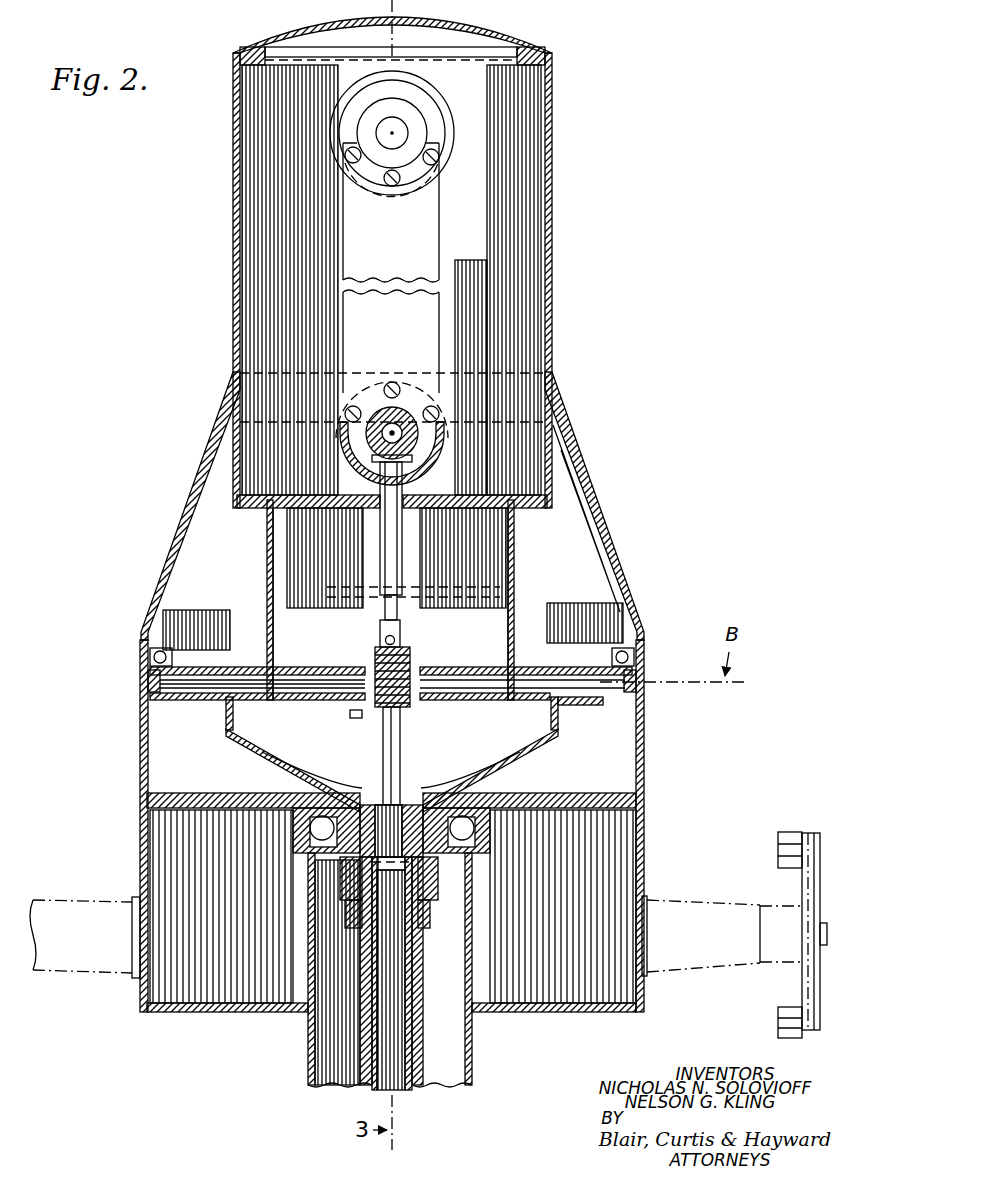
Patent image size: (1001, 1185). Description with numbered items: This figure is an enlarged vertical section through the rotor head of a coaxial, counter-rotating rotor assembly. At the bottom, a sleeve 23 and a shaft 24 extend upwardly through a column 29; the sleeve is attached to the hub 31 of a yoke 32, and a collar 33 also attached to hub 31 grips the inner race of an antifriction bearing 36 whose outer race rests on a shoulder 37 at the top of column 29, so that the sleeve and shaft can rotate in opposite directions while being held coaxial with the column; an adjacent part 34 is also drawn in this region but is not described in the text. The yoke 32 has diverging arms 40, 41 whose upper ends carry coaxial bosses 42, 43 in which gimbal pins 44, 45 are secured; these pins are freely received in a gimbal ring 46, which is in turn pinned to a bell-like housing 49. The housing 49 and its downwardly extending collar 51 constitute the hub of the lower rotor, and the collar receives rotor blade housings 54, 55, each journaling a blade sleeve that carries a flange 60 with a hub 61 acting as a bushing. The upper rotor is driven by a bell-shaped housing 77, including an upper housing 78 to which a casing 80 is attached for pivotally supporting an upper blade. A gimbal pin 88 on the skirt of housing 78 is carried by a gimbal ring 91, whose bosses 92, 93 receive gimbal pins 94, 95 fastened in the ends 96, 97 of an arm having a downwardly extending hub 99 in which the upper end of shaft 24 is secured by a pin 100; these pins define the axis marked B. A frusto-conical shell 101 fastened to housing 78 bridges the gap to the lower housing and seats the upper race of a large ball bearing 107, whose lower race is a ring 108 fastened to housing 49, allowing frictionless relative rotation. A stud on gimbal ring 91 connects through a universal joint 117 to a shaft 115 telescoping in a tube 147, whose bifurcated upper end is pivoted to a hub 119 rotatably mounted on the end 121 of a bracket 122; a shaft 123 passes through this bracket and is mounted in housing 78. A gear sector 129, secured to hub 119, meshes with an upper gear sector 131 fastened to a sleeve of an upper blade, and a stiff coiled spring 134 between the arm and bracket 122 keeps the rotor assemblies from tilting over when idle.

The sleeve 23 is at (425, 978).
The shaft 24 is at (410, 1042).
The column 29 is at (474, 1034).
The hub 31 is at (438, 925).
The yoke 32 is at (503, 776).
The collar 33 is at (440, 888).
The hub 34 is at (450, 852).
The antifriction bearing 36 is at (490, 836).
The shoulder 37 is at (482, 857).
The arm 40 is at (268, 757).
The arm 41 is at (560, 742).
The boss 42 is at (220, 720).
The boss 43 is at (572, 703).
The gimbal pin 44 is at (195, 705).
The gimbal pin 45 is at (592, 690).
The gimbal ring 46 is at (170, 702).
The bell-like housing 49 is at (140, 767).
The collar 51 is at (138, 845).
The rotor blade housing 54 is at (62, 900).
The rotor blade housing 55 is at (704, 898).
The flange 60 is at (802, 978).
The hub 61 is at (767, 965).
The bell-shaped housing 77 is at (604, 316).
The upper housing 78 is at (553, 278).
The casing 80 is at (425, 120).
The gimbal pin 88 is at (346, 658).
The gimbal ring 91 is at (487, 667).
The boss 92 is at (285, 712).
The boss 93 is at (494, 705).
The gimbal pin 94 is at (307, 680).
The gimbal pin 95 is at (460, 680).
The arm end 96 is at (318, 684).
The arm end 97 is at (437, 688).
The hub 99 is at (418, 724).
The pin 100 is at (378, 752).
The frusto-conical shell 101 is at (585, 462).
The ball bearing 107 is at (150, 657).
The ring 108 is at (148, 680).
The shaft 115 is at (383, 610).
The universal joint 117 is at (398, 615).
The hub 119 is at (365, 415).
The bracket end 121 is at (400, 423).
The bracket 122 is at (368, 408).
The shaft 123 is at (394, 425).
The gear sector 129 is at (440, 338).
The upper gear sector 131 is at (440, 236).
The coiled spring 134 is at (410, 470).
The tube 147 is at (404, 566).